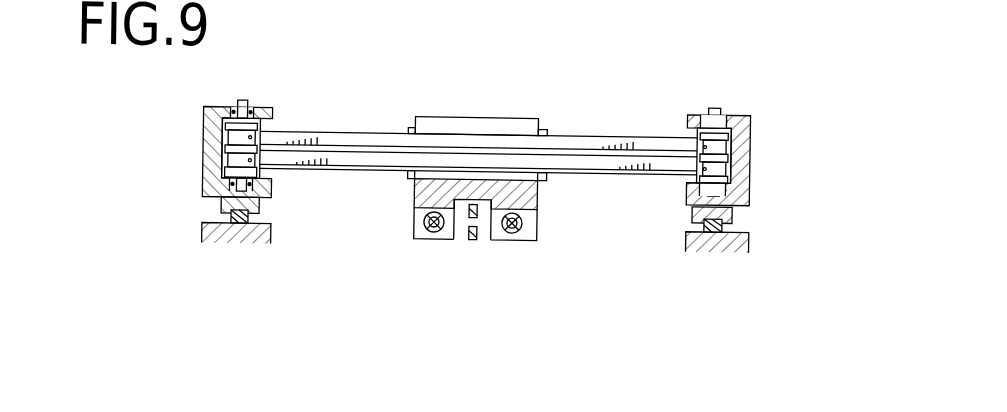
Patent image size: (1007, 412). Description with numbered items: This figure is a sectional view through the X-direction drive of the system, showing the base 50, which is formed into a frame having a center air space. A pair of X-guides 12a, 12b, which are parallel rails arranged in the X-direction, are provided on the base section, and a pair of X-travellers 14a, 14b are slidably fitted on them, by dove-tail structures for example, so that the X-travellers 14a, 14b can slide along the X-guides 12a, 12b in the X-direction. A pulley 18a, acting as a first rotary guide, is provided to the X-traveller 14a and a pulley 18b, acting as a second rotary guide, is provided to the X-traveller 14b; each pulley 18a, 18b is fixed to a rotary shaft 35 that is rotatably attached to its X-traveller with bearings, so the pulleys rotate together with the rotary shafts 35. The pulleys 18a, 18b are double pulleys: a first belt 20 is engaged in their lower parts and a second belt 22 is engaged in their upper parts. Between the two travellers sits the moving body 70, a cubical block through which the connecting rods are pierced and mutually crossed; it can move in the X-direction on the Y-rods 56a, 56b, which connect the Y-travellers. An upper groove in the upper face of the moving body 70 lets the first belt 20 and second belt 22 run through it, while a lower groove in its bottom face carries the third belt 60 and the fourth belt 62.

The rotary shaft 35 is at (240, 100).
The second belt 22 is at (345, 129).
The moving body 70 is at (515, 123).
The pulley 18a is at (203, 143).
The pulley 18b is at (733, 150).
The X-traveller 14a is at (220, 203).
The X-traveller 14b is at (733, 210).
The base 50 is at (203, 233).
The X-guide 12a is at (237, 225).
The X-guide 12b is at (715, 226).
The first belt 20 is at (355, 163).
The Y-rod 56a is at (415, 222).
The Y-rod 56b is at (538, 213).
The third belt 60 is at (470, 235).
The fourth belt 62 is at (480, 209).